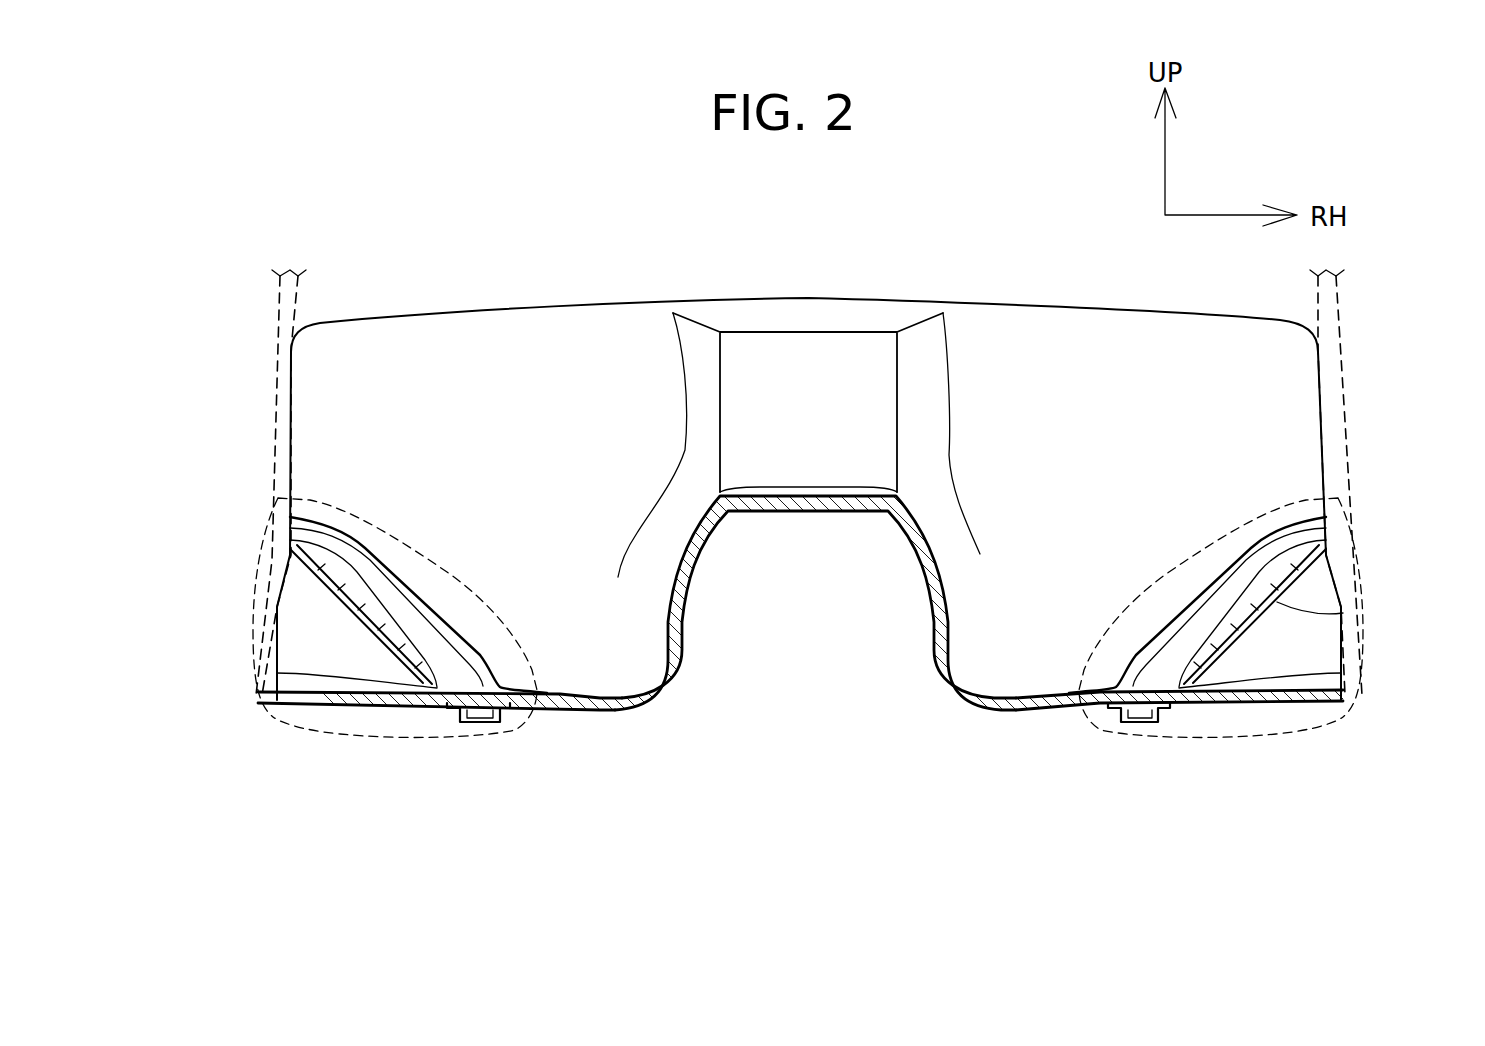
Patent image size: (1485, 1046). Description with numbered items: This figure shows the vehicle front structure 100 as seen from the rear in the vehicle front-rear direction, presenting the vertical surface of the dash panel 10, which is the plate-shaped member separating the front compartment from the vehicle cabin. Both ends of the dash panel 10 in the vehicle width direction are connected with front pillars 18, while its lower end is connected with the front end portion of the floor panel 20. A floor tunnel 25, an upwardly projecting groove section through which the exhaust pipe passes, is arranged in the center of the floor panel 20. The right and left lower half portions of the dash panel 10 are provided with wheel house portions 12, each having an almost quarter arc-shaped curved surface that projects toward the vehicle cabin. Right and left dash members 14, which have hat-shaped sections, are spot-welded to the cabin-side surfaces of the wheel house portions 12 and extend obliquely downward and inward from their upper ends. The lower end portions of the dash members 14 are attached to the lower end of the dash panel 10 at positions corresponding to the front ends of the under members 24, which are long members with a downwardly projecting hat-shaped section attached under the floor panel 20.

The vehicle front structure 100 is at (223, 222).
The dash panel 10 is at (1328, 418).
The wheel house portion 12 is at (250, 610).
The dash member 14 is at (330, 518).
The front pillar 18 is at (280, 312).
The floor panel 20 is at (1313, 703).
The under member 24 is at (1150, 722).
The floor tunnel 25 is at (925, 598).